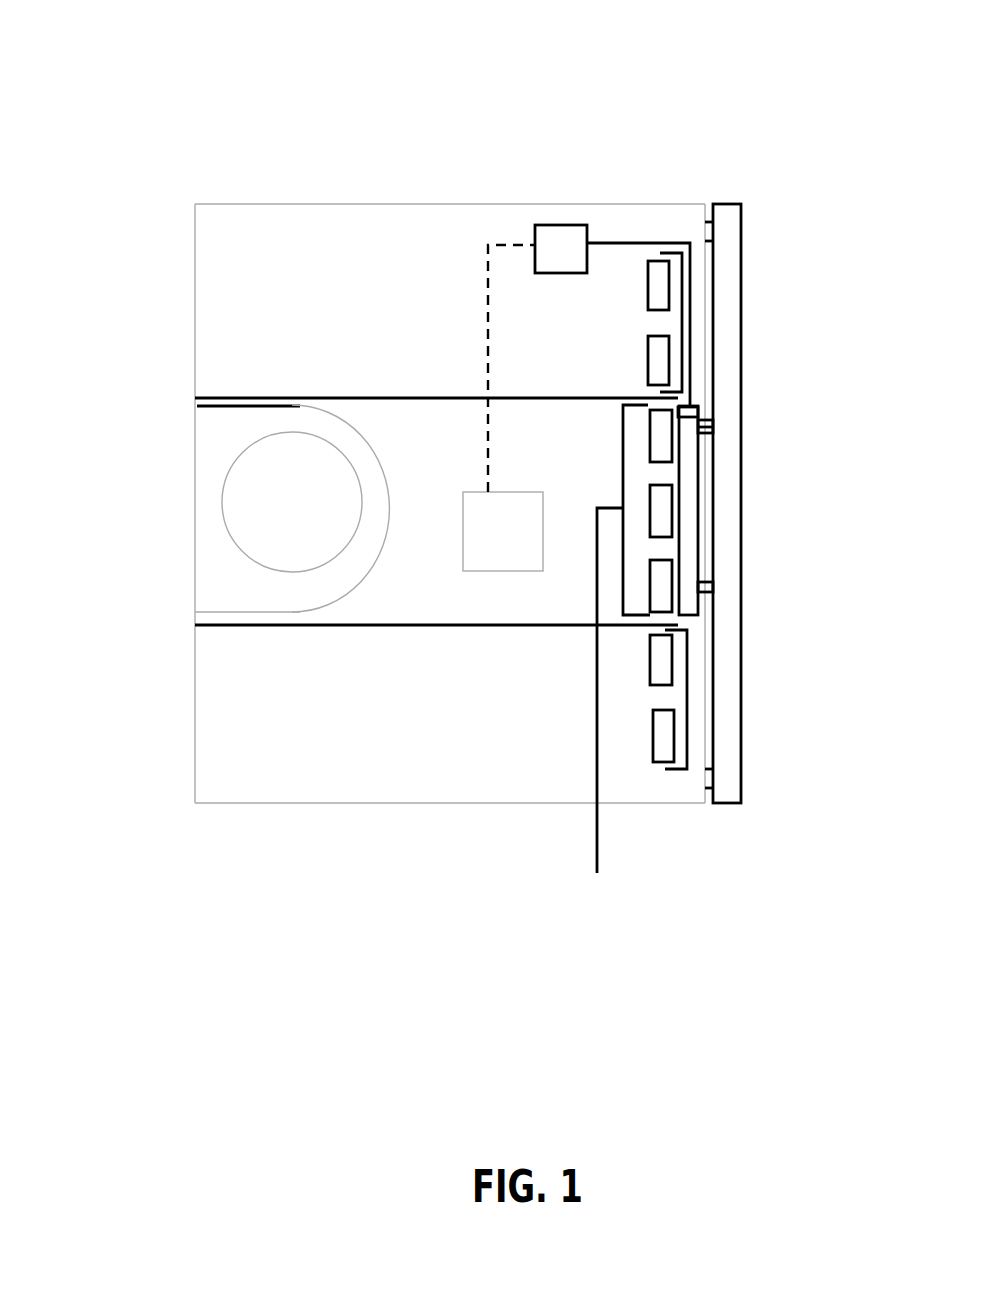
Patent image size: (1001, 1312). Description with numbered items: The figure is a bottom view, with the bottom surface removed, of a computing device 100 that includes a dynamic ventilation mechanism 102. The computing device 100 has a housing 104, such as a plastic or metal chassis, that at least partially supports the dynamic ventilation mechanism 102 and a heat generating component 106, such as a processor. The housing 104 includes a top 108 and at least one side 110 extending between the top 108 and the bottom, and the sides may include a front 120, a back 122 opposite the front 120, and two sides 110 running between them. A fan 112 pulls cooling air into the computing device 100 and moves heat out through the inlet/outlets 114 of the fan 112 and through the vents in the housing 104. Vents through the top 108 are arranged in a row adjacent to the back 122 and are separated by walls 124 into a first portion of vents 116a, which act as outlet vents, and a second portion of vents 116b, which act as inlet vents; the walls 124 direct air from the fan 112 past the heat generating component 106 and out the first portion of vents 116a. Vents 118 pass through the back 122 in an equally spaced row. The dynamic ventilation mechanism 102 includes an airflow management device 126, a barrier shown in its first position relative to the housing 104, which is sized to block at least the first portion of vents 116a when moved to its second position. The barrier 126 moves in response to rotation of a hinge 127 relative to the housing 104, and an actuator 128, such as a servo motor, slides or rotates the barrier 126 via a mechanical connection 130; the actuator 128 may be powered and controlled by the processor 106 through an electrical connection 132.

The computing device 100 is at (173, 187).
The dynamic ventilation mechanism 102 is at (717, 402).
The housing 104 is at (283, 803).
The heat generating component 106 is at (506, 535).
The top 108 is at (363, 765).
The side 110 is at (308, 204).
The fan 112 is at (212, 521).
The inlet/outlets 114 is at (197, 600).
The first portion of vents 116a is at (621, 660).
The second portion of vents 116b is at (682, 304).
The vents 118 is at (703, 557).
The front 120 is at (196, 302).
The back 122 is at (705, 736).
The walls 124 is at (427, 396).
The airflow management device 126 is at (690, 442).
The hinge 127 is at (726, 222).
The actuator 128 is at (553, 243).
The mechanical connection 130 is at (638, 241).
The electrical connection 132 is at (507, 244).